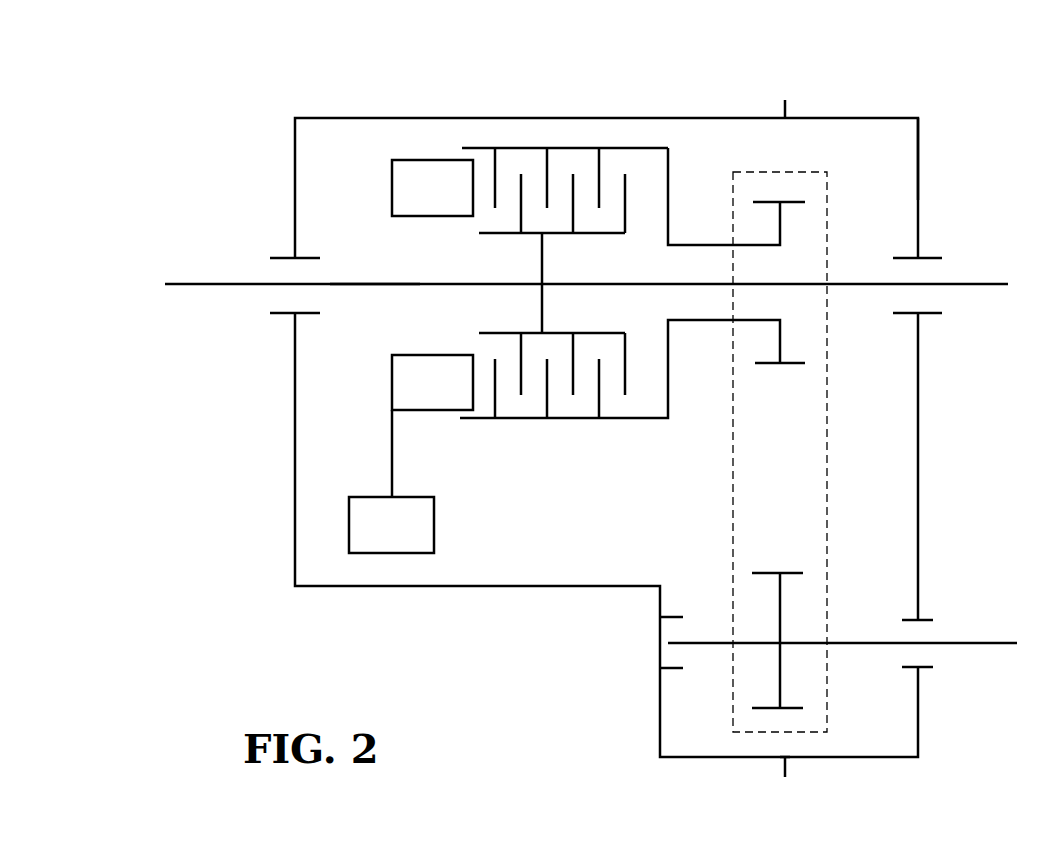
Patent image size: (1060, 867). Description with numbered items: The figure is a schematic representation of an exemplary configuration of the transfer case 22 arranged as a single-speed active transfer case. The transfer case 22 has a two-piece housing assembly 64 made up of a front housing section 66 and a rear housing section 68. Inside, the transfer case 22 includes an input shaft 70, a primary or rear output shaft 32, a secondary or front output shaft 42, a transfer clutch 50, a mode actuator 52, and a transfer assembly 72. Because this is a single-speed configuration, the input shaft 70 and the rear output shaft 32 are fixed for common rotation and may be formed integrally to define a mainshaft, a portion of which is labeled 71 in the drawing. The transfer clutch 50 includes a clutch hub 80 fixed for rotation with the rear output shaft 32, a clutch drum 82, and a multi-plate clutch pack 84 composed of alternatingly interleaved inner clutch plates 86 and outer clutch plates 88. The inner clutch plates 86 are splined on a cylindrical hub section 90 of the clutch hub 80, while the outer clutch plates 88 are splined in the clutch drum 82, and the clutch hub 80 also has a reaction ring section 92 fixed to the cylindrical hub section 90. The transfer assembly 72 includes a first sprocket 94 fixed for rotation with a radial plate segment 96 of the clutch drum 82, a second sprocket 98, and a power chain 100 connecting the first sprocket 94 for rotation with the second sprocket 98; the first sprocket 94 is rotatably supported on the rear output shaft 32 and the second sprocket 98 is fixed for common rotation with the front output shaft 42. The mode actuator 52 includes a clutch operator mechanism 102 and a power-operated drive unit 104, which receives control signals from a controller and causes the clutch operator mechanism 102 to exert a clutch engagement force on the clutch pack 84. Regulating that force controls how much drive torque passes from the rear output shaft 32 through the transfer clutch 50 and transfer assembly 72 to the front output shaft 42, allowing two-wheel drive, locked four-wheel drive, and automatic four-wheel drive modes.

The transfer case 22 is at (946, 111).
The rear output shaft 32 is at (212, 283).
The front output shaft 42 is at (980, 643).
The transfer clutch 50 is at (590, 132).
The mode actuator 52 is at (370, 442).
The housing assembly 64 is at (500, 106).
The front housing section 66 is at (860, 757).
The rear housing section 68 is at (720, 757).
The input shaft 70 is at (972, 283).
The shaft portion 71 is at (370, 285).
The transfer assembly 72 is at (858, 469).
The clutch hub 80 is at (542, 274).
The clutch drum 82 is at (628, 420).
The clutch pack 84 is at (555, 406).
The inner clutch plates 86 is at (575, 352).
The outer clutch plates 88 is at (597, 402).
The cylindrical hub section 90 is at (485, 233).
The reaction ring section 92 is at (625, 188).
The first sprocket 94 is at (793, 202).
The radial plate segment 96 is at (670, 183).
The second sprocket 98 is at (793, 573).
The power chain 100 is at (827, 693).
The clutch operator mechanism 102 is at (432, 188).
The power-operated drive unit 104 is at (391, 525).